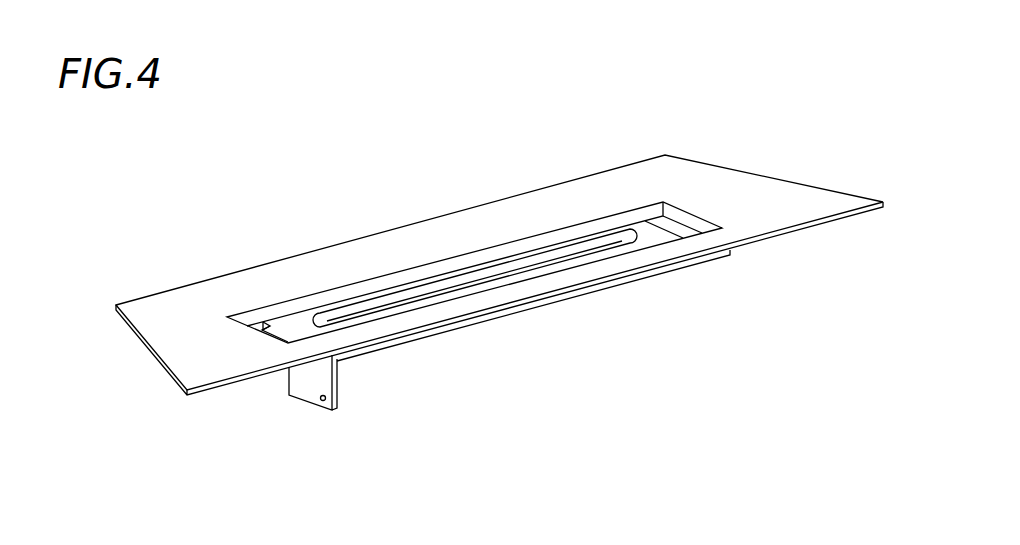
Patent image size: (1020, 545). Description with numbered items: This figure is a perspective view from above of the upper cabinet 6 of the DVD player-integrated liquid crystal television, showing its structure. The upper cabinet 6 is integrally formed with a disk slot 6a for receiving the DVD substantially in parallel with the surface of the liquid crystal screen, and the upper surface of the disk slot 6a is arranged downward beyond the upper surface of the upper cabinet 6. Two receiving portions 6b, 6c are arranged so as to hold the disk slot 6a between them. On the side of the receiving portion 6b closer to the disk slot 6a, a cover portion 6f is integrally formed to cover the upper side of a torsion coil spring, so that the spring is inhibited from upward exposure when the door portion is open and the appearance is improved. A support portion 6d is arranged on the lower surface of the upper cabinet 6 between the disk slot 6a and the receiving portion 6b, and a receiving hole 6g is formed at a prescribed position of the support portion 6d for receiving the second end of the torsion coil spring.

The upper cabinet 6 is at (697, 167).
The disk slot 6a is at (500, 270).
The receiving portion 6b is at (263, 322).
The receiving portion 6c is at (693, 225).
The support portion 6d is at (330, 379).
The cover portion 6f is at (287, 334).
The receiving hole 6g is at (323, 402).